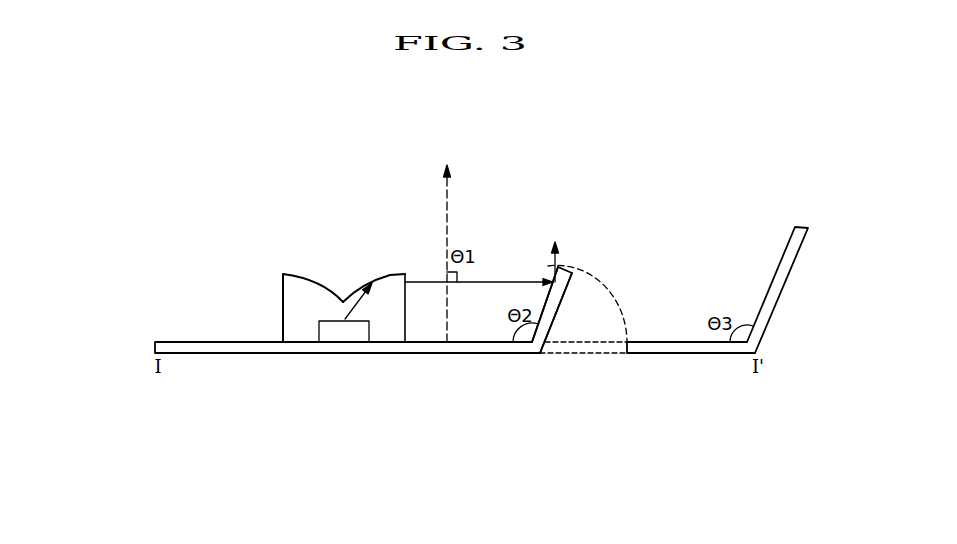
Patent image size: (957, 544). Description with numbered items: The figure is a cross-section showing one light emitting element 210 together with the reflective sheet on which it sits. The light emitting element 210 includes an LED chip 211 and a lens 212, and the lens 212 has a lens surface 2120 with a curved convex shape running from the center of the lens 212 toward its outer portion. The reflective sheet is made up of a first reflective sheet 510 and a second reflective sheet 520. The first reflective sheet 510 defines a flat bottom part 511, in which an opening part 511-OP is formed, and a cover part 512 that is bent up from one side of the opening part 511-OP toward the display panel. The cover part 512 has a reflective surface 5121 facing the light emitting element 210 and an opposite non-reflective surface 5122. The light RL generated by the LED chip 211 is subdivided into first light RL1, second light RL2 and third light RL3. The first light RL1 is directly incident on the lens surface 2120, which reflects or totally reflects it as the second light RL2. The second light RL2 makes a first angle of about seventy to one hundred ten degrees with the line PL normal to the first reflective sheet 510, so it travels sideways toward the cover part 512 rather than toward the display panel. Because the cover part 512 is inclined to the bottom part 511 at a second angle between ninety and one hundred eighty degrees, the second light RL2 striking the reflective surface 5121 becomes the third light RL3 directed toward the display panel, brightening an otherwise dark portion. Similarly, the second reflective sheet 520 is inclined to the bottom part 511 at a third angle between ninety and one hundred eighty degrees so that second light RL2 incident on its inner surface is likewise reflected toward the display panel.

The light emitting element 210 is at (280, 278).
The LED chip 211 is at (323, 332).
The lens 212 is at (305, 278).
The lens surface 2120 is at (393, 276).
The first reflective sheet 510 is at (455, 259).
The bottom part 511 is at (677, 342).
The cover part 512 is at (602, 258).
The reflective surface 5121 is at (561, 264).
The non-reflective surface 5122 is at (572, 290).
The opening part 511-OP is at (538, 357).
The second reflective sheet 520 is at (771, 283).
The first light RL1 is at (390, 283).
The second light RL2 is at (432, 283).
The third light RL3 is at (552, 265).
The light RL is at (353, 426).
The normal line PL is at (447, 242).